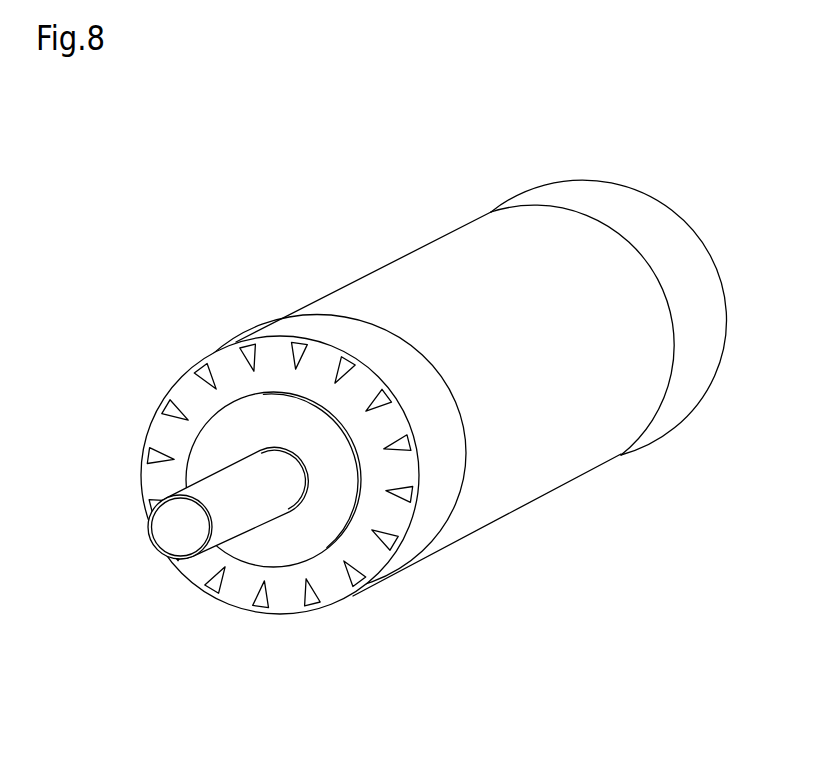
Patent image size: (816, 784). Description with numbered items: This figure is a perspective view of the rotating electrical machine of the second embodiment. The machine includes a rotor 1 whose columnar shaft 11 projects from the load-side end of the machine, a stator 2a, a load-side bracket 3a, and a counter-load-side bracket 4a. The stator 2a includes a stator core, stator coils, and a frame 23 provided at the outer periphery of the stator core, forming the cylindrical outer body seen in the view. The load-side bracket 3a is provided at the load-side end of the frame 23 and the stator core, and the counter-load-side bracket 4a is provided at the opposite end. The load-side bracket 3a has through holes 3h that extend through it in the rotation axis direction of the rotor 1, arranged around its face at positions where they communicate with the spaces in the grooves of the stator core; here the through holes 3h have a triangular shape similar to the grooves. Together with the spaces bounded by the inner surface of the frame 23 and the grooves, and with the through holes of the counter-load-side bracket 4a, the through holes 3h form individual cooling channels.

The rotor 1 is at (191, 557).
The shaft 11 is at (185, 528).
The stator 2a is at (426, 243).
The frame 23 is at (410, 274).
The load-side bracket 3a is at (173, 392).
The through holes 3h is at (342, 573).
The counter-load-side bracket 4a is at (598, 200).